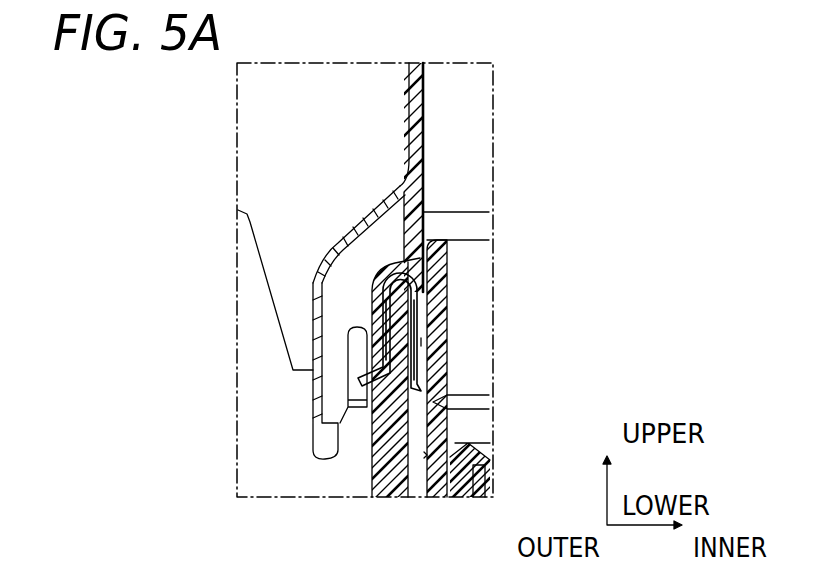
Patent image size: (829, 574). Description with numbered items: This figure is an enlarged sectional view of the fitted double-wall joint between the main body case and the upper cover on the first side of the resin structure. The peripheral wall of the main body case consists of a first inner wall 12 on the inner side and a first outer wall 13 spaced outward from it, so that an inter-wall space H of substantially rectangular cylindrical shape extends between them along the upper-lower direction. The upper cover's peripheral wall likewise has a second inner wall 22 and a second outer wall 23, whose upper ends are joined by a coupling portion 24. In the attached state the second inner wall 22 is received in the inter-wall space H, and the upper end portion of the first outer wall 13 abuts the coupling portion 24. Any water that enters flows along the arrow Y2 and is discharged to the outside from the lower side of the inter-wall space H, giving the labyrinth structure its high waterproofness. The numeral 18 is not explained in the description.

The first inner wall 12 is at (447, 423).
The first outer wall 13 is at (372, 443).
The lever plate 18 is at (335, 335).
The second inner wall 22 is at (420, 287).
The second outer wall 23 is at (370, 312).
The coupling portion 24 is at (400, 280).
The inter-wall space H is at (427, 455).
The arrow Y2 is at (425, 342).